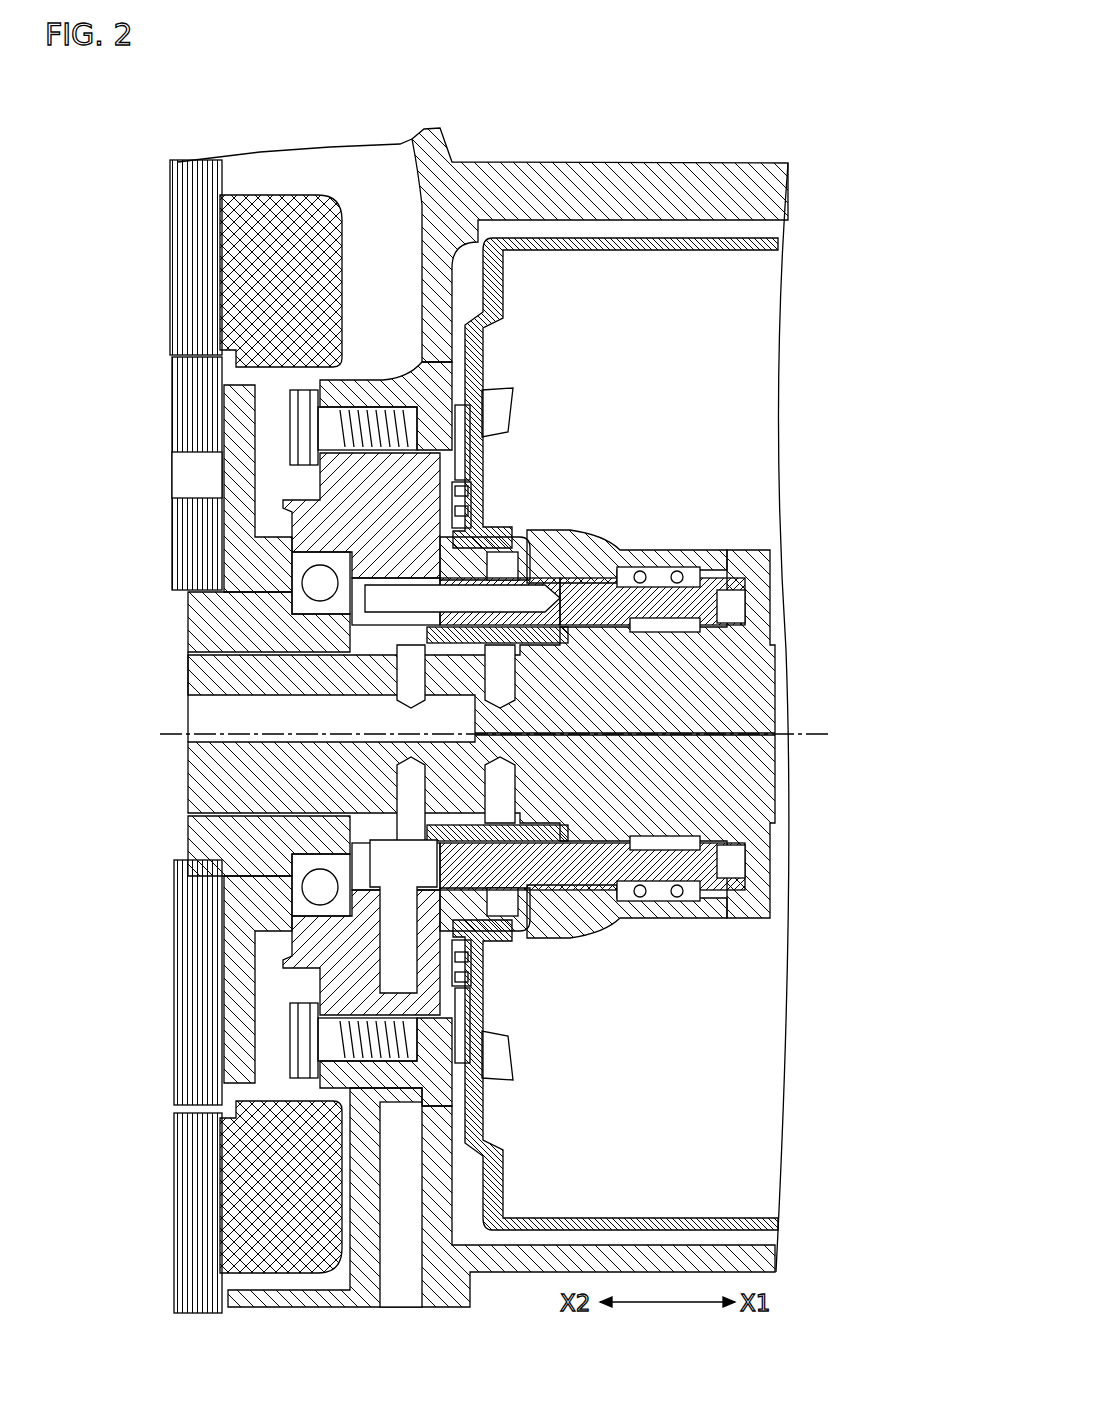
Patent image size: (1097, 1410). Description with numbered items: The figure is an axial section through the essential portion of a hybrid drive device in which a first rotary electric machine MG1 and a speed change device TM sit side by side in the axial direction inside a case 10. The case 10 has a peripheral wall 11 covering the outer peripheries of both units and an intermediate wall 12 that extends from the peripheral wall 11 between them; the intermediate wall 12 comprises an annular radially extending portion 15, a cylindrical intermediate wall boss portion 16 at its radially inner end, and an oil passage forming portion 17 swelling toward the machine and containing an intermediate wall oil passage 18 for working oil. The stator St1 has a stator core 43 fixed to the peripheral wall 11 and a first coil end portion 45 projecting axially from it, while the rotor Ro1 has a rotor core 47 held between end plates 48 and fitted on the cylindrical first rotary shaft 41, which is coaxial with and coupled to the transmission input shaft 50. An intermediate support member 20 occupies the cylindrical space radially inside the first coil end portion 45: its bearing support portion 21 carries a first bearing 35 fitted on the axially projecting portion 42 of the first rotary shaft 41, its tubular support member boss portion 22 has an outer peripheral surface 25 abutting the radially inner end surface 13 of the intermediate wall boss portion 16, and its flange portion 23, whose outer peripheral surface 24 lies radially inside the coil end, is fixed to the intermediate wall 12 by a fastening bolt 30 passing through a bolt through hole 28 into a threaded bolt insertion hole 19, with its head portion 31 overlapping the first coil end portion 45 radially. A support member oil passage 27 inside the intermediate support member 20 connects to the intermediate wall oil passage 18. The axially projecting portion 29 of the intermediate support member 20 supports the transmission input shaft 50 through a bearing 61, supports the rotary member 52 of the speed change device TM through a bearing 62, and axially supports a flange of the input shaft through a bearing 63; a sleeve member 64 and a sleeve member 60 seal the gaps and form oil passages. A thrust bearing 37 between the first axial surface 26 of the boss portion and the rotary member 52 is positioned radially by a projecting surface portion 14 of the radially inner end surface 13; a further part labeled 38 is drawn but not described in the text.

The first rotary electric machine MG1 is at (158, 165).
The stator St1 is at (158, 212).
The rotor Ro1 is at (170, 363).
The speed change device TM is at (710, 238).
The case 10 is at (483, 704).
The peripheral wall 11 is at (503, 182).
The intermediate wall 12 is at (614, 680).
The radially inner end surface 13 is at (377, 507).
The projecting surface portion 14 is at (470, 992).
The radially extending portion 15 is at (452, 277).
The intermediate wall boss portion 16 is at (457, 362).
The oil passage forming portion 17 is at (450, 1175).
The intermediate wall oil passage 18 is at (405, 1272).
The bolt insertion hole 19 is at (445, 432).
The intermediate support member 20 is at (411, 726).
The bearing support portion 21 is at (290, 548).
The support member boss portion 22 is at (465, 517).
The flange portion 23 is at (240, 392).
The outer peripheral surface 24 is at (383, 382).
The outer peripheral surface 25 is at (455, 480).
The first axial surface 26 is at (400, 873).
The support member oil passage 27 is at (390, 970).
The bolt through hole 28 is at (300, 452).
The axially projecting portion 29 is at (647, 593).
The fastening bolt 30 is at (470, 418).
The head portion 31 is at (302, 432).
The first bearing 35 is at (320, 590).
The thrust bearing 37 is at (462, 958).
The sensor holder 38 is at (470, 1013).
The first rotary shaft 41 is at (200, 843).
The axially projecting portion 42 is at (313, 633).
The stator core 43 is at (172, 245).
The first coil end portion 45 is at (272, 195).
The rotor core 47 is at (193, 917).
The end plates 48 is at (225, 958).
The transmission input shaft 50 is at (780, 660).
The rotary member 52 is at (585, 245).
The sleeve member 60 is at (558, 633).
The bearing 61 is at (690, 848).
The bearing 62 is at (650, 898).
The bearing 63 is at (733, 858).
The sleeve member 64 is at (587, 947).